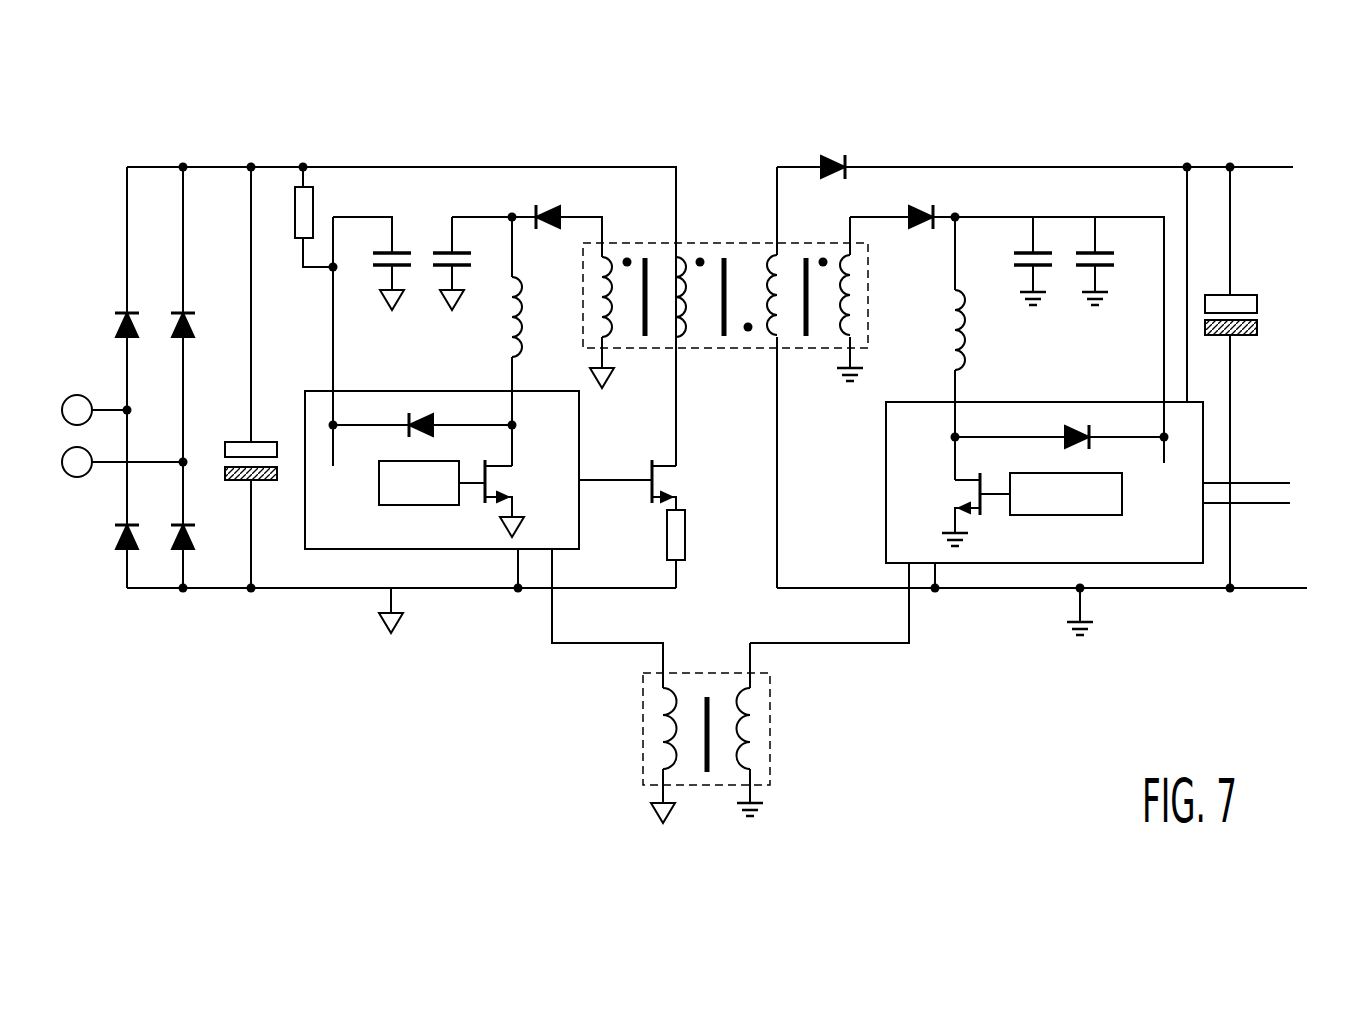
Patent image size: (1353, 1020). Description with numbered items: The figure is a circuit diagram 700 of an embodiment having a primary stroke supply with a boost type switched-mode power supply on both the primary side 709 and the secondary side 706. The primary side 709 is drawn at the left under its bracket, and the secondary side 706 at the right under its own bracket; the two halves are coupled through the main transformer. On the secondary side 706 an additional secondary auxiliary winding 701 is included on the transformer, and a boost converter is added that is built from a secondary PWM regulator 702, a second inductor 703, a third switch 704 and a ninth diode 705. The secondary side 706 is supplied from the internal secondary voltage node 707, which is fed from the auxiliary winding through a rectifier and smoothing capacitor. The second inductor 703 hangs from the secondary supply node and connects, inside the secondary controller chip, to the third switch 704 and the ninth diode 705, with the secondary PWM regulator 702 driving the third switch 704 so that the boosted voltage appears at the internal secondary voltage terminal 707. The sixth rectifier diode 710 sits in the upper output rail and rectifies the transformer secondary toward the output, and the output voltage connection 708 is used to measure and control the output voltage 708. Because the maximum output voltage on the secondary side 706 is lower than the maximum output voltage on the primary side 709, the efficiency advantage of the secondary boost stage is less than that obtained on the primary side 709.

The circuit diagram 700 is at (1313, 128).
The secondary auxiliary winding 701 is at (781, 328).
The PWM-regSec 702 is at (1073, 518).
The inductor L2 703 is at (966, 372).
The switch S3 704 is at (983, 505).
The diode D9 705 is at (1062, 435).
The secondary side 706 is at (1293, 130).
The VintSec 707 is at (1096, 214).
The Vout 708 is at (1292, 170).
The primary side 709 is at (747, 130).
The rectifier diode D6 710 is at (846, 160).